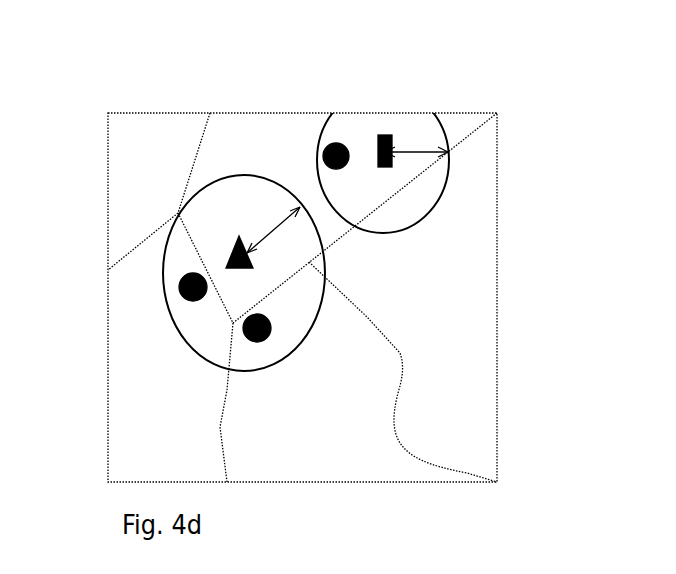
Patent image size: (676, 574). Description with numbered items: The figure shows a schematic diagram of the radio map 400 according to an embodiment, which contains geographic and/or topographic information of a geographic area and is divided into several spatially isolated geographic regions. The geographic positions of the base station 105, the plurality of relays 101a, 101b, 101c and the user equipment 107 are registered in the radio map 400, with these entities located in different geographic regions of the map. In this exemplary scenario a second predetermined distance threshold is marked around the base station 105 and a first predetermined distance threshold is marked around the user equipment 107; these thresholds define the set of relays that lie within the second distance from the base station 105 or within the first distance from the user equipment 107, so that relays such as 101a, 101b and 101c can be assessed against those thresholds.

The radio map 400 is at (510, 177).
The base station 105 is at (240, 238).
The relay 101a is at (333, 147).
The relay 101b is at (257, 343).
The relay 101c is at (185, 286).
The user equipment 107 is at (387, 135).